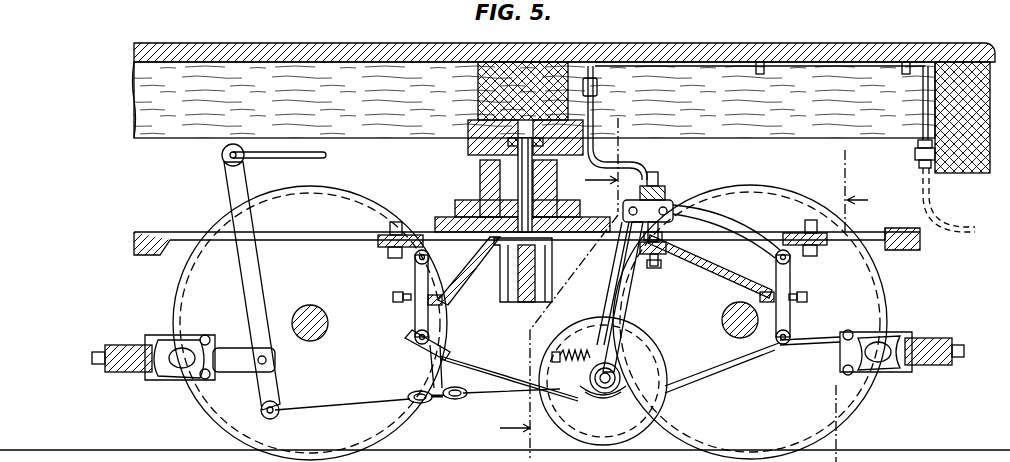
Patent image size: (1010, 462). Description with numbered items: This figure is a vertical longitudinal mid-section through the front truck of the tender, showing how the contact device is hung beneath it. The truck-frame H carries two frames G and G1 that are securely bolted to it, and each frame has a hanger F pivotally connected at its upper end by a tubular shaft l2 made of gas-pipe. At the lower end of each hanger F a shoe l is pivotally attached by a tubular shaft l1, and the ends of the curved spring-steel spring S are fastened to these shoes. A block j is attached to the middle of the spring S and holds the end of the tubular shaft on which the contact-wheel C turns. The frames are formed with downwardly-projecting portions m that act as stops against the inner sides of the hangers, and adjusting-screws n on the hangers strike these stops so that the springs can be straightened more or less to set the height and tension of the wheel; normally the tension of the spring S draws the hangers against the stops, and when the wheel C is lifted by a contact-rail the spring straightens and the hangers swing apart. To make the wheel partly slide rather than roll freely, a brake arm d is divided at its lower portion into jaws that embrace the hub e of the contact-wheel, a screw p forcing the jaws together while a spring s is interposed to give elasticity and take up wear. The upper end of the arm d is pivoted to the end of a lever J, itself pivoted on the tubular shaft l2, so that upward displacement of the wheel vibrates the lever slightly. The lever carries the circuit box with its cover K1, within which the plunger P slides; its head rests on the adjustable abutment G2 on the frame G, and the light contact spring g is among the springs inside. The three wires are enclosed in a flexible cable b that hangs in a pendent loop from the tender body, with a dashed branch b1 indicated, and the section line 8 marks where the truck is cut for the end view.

The truck-frame H is at (527, 230).
The section line 8 8 is at (845, 146).
The tubular shaft l2 is at (415, 260).
The frame G1 is at (469, 271).
The hanger F is at (416, 318).
The adjusting-screw n is at (393, 298).
The downwardly-projecting portion m is at (443, 300).
The shoe l is at (410, 348).
The tubular shaft l1 is at (790, 335).
The flexible cable b is at (588, 160).
The pipe branch b1 is at (968, 238).
The circuit closing spring g is at (634, 104).
The cover K1 is at (658, 195).
The plunger P is at (662, 236).
The abutment G2 is at (658, 266).
The lever J is at (740, 236).
The frame G is at (710, 266).
The arm d is at (622, 298).
The contact-wheel C is at (603, 381).
The hub e is at (615, 372).
The spring s is at (575, 347).
The screw p is at (556, 347).
The block j is at (580, 372).
The spring S is at (509, 378).